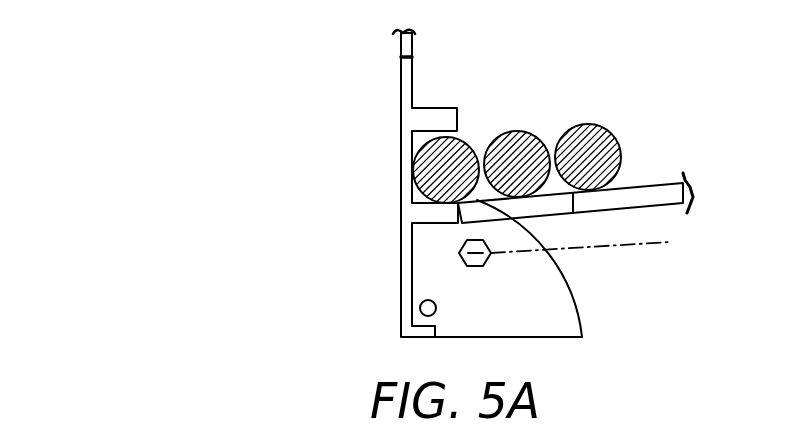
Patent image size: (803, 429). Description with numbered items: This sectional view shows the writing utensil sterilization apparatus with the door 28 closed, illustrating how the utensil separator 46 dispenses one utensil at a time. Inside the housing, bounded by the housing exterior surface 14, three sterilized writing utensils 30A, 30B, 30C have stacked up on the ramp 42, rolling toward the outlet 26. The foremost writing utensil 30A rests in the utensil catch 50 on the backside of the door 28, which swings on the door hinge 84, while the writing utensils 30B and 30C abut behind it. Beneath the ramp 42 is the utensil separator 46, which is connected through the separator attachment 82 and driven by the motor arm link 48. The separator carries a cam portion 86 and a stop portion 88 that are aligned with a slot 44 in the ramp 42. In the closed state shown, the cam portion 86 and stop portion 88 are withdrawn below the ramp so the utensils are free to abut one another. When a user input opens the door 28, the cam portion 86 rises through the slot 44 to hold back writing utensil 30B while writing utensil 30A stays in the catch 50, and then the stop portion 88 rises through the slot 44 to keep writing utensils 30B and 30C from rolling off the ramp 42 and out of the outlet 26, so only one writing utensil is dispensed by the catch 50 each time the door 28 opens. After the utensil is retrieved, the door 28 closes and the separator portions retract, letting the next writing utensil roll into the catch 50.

The housing exterior surface 14 is at (401, 47).
The outlet 26 is at (330, 153).
The door 28 is at (401, 87).
The writing utensil 30A is at (470, 140).
The writing utensil 30B is at (530, 133).
The writing utensil 30C is at (602, 122).
The ramp 42 is at (640, 195).
The slot 44 is at (560, 213).
The utensil separator 46 is at (550, 313).
The motor arm link 48 is at (610, 250).
The utensil catch 50 is at (418, 98).
The separator attachment 82 is at (459, 253).
The door hinge 84 is at (420, 308).
The cam portion 86 is at (565, 275).
The stop portion 88 is at (550, 338).